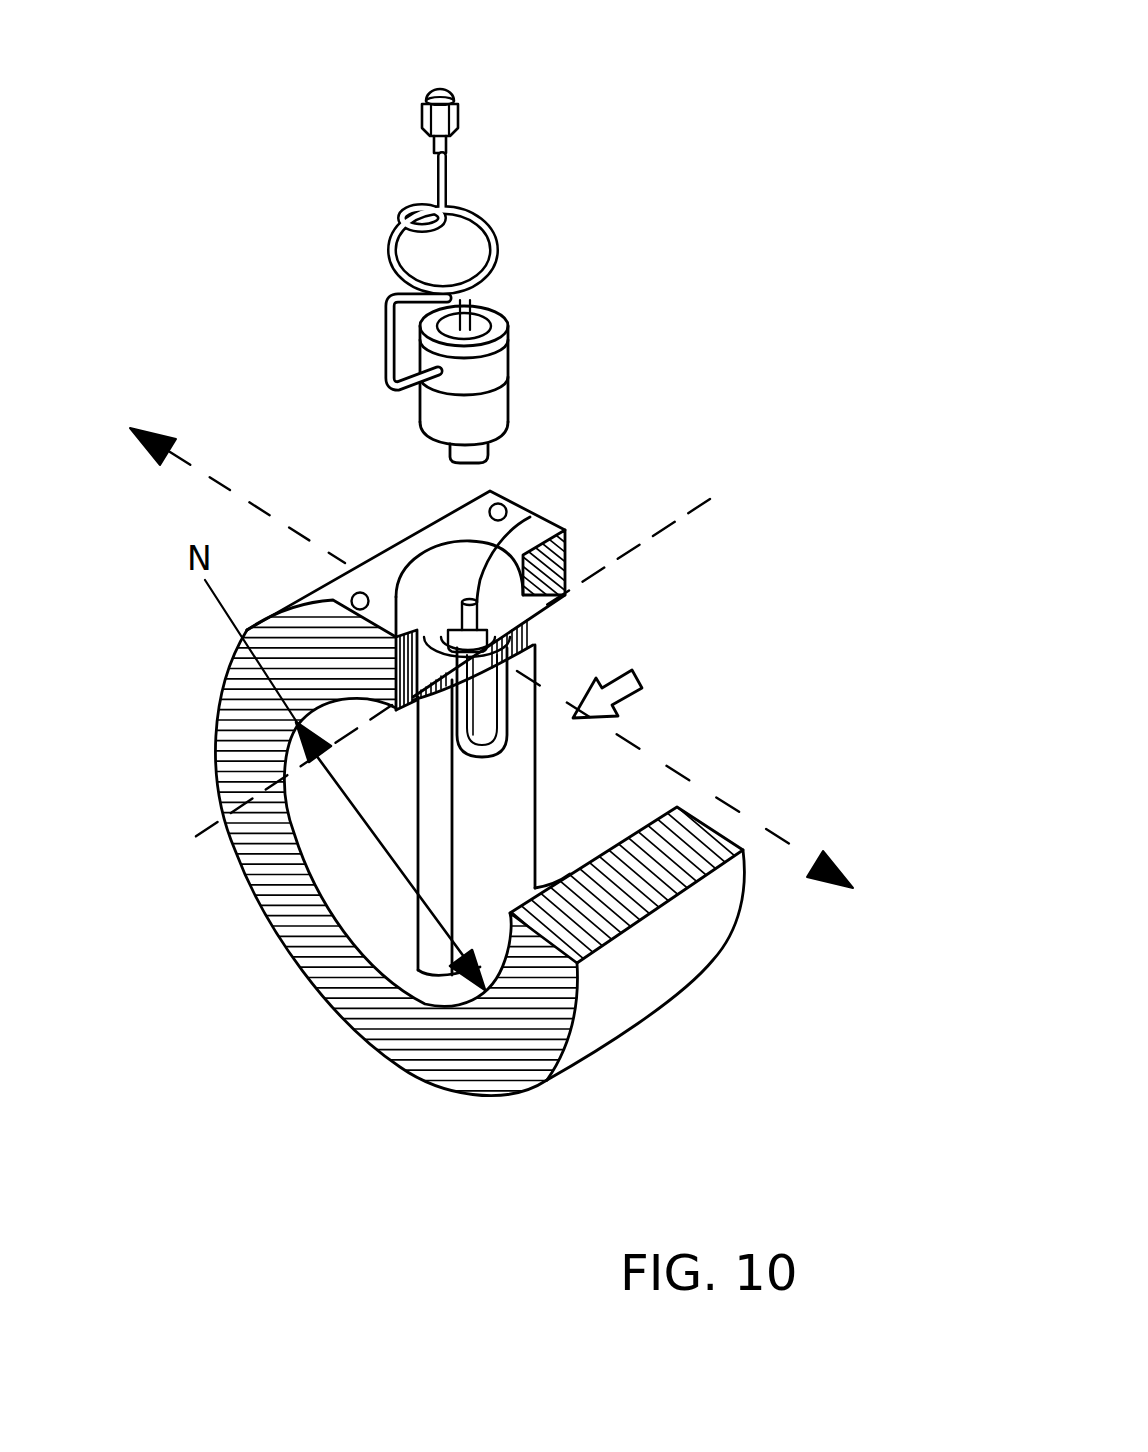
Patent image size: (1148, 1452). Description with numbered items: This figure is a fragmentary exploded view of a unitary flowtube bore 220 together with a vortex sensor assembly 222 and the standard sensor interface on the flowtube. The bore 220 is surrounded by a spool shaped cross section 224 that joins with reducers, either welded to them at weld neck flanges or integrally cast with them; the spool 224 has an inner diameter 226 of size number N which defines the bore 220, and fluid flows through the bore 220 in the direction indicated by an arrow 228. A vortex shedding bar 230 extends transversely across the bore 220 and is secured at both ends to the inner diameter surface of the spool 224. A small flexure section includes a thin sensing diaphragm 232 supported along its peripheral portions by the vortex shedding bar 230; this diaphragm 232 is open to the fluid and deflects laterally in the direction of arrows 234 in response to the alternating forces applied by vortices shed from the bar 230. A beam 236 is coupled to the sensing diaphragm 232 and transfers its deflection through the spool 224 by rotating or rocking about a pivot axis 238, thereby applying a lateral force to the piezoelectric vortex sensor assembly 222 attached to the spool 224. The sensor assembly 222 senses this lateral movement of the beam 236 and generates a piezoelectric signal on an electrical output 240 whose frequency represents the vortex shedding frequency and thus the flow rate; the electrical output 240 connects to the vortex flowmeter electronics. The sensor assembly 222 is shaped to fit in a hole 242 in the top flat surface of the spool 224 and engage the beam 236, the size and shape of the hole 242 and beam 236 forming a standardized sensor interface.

The unitary flowtube bore 220 is at (345, 855).
The vortex sensor assembly 222 is at (512, 392).
The spool shaped cross section 224 is at (407, 1043).
The inner diameter 226 is at (390, 820).
The arrow 228 is at (603, 703).
The vortex shedding bar 230 is at (507, 850).
The sensing diaphragm 232 is at (540, 727).
The arrows 234 is at (162, 430).
The beam 236 is at (530, 517).
The pivot axis 238 is at (712, 500).
The electrical output 240 is at (438, 86).
The hole 242 is at (417, 598).